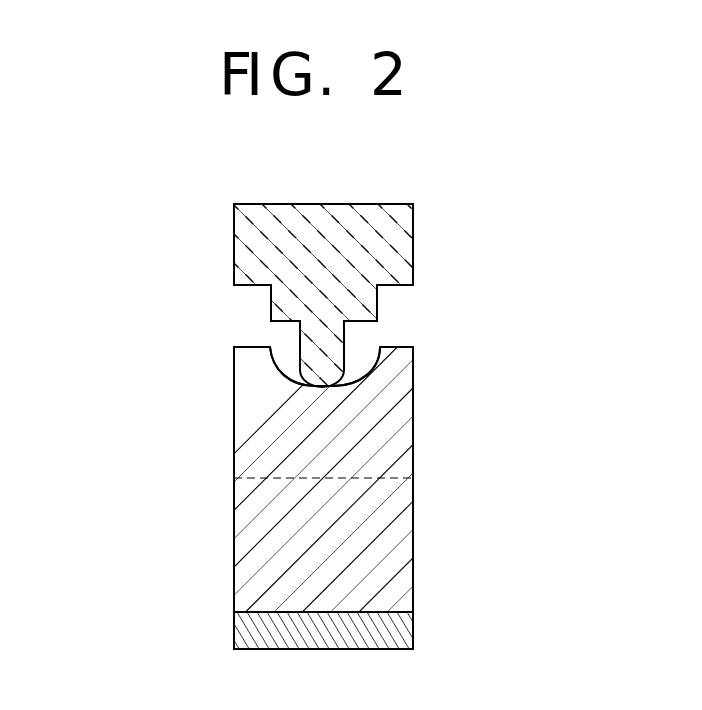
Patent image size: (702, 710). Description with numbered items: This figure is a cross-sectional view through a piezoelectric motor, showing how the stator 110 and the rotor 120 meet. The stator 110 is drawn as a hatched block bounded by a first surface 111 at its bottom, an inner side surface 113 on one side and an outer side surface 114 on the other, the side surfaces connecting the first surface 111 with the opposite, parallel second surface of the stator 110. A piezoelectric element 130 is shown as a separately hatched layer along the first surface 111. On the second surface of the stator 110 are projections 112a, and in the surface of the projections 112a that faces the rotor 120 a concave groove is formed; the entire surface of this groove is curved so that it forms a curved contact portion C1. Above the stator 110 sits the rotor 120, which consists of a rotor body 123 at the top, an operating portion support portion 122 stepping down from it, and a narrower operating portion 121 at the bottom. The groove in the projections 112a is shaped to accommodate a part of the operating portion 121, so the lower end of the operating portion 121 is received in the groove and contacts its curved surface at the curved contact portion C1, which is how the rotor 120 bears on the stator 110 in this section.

The stator 110 is at (425, 453).
The first surface 111 is at (347, 612).
The projections 112a is at (248, 424).
The curved contact portion C1 is at (203, 331).
The inner side surface 113 is at (238, 533).
The outer side surface 114 is at (414, 540).
The rotor 120 is at (527, 228).
The operating portion 121 is at (343, 342).
The operating portion support portion 122 is at (370, 303).
The rotor body 123 is at (413, 236).
The piezoelectric element 130 is at (245, 629).